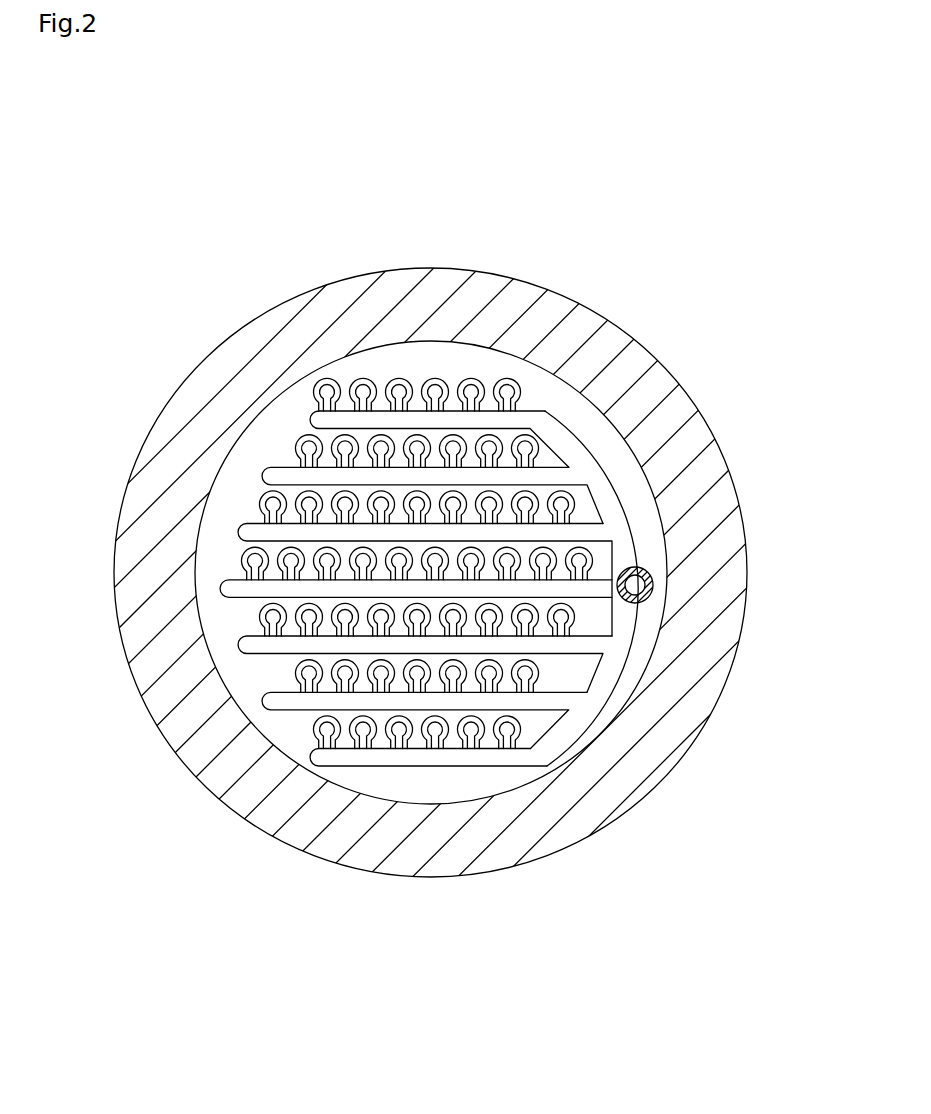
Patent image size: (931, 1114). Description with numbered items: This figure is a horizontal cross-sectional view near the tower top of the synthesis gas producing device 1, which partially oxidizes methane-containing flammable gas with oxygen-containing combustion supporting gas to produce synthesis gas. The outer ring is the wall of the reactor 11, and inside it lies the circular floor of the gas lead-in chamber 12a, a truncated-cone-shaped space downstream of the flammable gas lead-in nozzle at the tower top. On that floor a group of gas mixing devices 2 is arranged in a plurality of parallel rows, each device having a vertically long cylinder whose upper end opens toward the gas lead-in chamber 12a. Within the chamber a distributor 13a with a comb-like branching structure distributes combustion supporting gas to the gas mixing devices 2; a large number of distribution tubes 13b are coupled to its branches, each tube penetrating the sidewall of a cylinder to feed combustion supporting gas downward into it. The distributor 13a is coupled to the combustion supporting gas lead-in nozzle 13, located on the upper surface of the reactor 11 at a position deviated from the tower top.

The synthesis gas producing device 1 is at (712, 275).
The gas mixing device 2 is at (326, 496).
The reactor 11 is at (719, 702).
The gas lead-in chamber 12a is at (260, 440).
The combustion supporting gas lead-in nozzle 13 is at (653, 587).
The distributor 13a is at (621, 496).
The distribution tube 13b is at (247, 575).